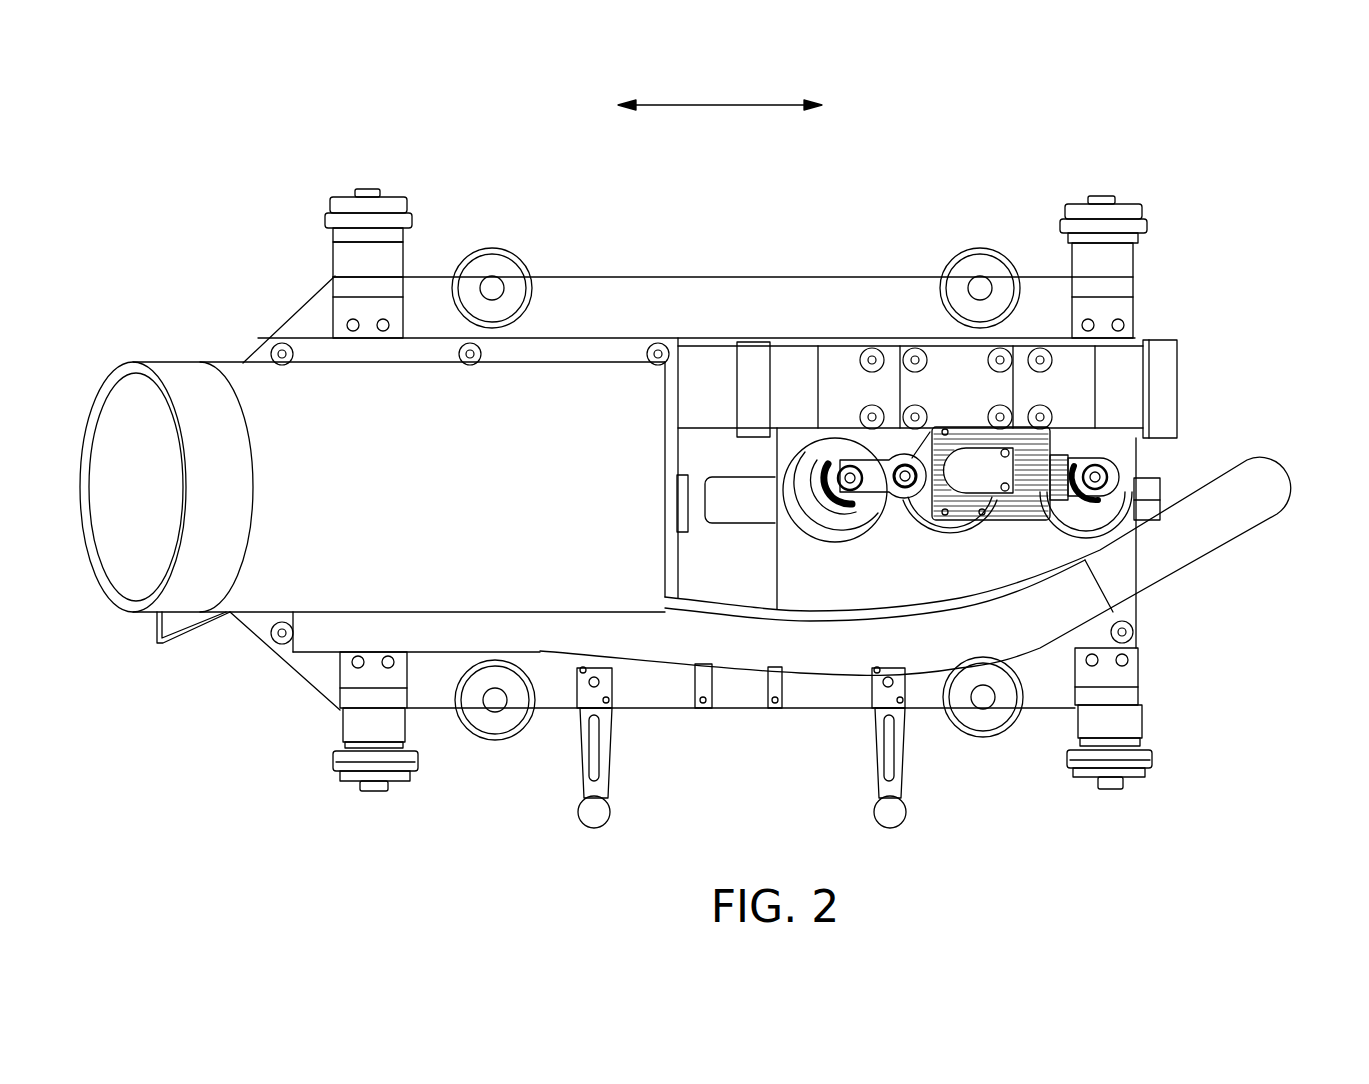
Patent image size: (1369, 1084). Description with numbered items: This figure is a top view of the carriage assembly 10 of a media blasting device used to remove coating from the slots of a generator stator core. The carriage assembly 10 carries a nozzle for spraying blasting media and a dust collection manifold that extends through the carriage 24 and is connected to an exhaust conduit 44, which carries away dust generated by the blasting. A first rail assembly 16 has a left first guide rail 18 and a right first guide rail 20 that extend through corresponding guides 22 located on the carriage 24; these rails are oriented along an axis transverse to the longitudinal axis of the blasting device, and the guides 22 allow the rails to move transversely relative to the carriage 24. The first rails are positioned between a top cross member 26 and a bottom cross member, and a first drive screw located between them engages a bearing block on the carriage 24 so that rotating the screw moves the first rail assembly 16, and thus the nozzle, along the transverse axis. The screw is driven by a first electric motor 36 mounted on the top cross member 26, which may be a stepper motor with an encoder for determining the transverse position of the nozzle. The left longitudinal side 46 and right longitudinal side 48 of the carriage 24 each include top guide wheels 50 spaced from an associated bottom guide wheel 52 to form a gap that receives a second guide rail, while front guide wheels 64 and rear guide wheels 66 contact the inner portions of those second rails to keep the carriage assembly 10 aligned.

The carriage assembly 10 is at (891, 141).
The first rail assembly 16 is at (881, 572).
The left first guide rail 18 is at (815, 485).
The right first guide rail 20 is at (1135, 466).
The guides 22 is at (797, 536).
The carriage 24 is at (590, 300).
The top cross member 26 is at (1080, 462).
The first electric motor 36 is at (1012, 428).
The exhaust conduit 44 is at (178, 362).
The left longitudinal side 46 is at (543, 715).
The right longitudinal side 48 is at (708, 277).
The top guide wheels 50 is at (405, 205).
The bottom guide wheel 52 is at (1160, 757).
The front guide wheels 64 is at (480, 250).
The rear guide wheels 66 is at (992, 247).